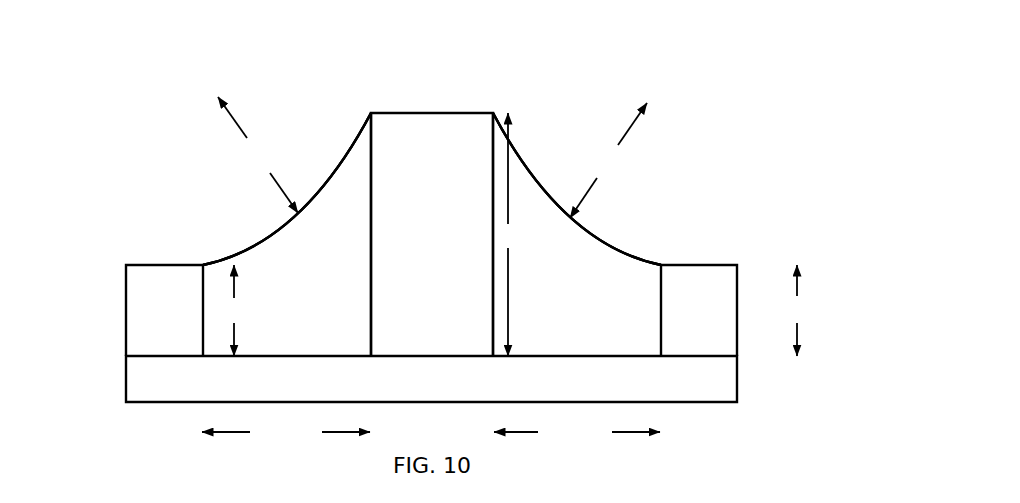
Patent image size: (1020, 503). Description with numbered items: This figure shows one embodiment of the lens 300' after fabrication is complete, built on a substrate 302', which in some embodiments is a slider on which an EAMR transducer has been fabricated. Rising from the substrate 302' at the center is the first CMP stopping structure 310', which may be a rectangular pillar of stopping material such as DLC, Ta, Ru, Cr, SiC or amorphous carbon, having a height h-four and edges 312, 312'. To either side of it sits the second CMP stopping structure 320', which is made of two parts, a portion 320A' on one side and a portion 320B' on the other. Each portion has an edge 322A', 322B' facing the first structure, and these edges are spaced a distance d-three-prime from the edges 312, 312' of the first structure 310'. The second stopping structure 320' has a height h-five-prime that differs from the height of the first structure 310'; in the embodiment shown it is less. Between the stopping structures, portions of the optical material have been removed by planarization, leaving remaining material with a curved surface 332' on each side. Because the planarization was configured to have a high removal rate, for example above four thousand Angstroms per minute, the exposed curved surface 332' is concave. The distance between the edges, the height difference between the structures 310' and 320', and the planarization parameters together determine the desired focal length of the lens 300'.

The lens 300' is at (433, 234).
The substrate 302' is at (442, 399).
The first CMP stopping structure 310' is at (432, 206).
The edges 312 is at (541, 206).
The edges 312' is at (321, 206).
The second CMP stopping structure 320' is at (424, 319).
The second CMP stopping structure portion 320A' is at (132, 305).
The second CMP stopping structure portion 320B' is at (732, 323).
The edge 322A' is at (208, 189).
The edge 322B' is at (657, 189).
The curved surface 332' is at (430, 189).